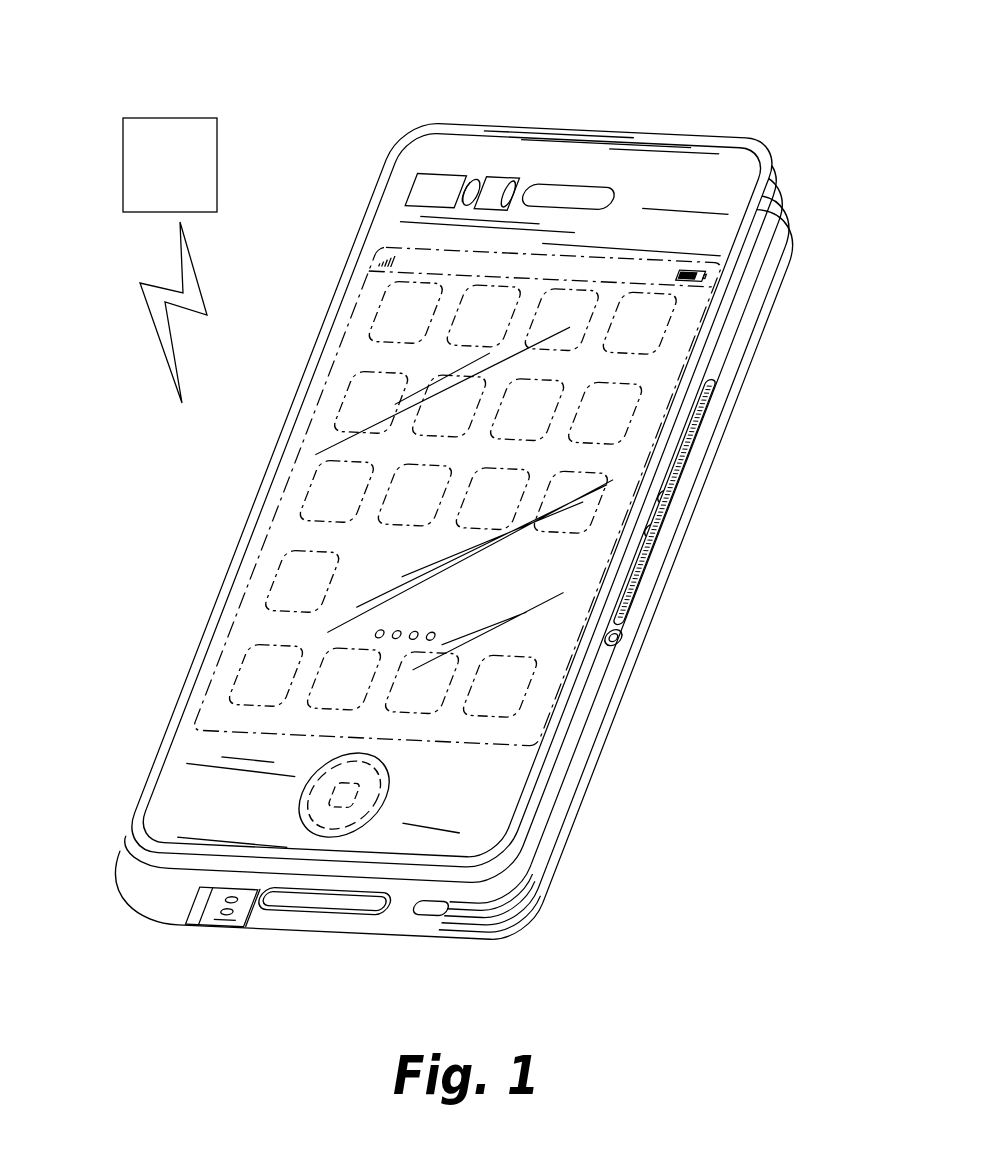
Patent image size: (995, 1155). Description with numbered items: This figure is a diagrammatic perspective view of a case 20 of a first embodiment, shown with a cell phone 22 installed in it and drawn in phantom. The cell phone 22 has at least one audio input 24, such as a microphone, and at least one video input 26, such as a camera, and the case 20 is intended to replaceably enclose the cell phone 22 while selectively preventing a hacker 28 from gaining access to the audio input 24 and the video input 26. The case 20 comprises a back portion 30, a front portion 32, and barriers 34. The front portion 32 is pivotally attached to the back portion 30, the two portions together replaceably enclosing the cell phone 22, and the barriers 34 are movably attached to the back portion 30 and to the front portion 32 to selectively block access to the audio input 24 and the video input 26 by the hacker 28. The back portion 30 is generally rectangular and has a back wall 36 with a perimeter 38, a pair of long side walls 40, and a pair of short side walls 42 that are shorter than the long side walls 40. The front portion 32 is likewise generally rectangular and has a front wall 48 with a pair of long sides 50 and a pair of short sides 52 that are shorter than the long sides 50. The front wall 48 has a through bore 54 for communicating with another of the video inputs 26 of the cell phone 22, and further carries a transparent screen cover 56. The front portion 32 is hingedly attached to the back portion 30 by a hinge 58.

The case 20 is at (455, 511).
The cell phone 22 is at (394, 496).
The audio input 24 is at (215, 925).
The video input 26 is at (437, 188).
The hacker 28 is at (192, 183).
The back portion 30 is at (625, 694).
The front portion 32 is at (663, 132).
The barriers 34 is at (497, 172).
The back wall 36 is at (517, 902).
The perimeter 38 is at (593, 777).
The long side walls 40 is at (737, 345).
The short side walls 42 is at (186, 900).
The front wall 48 is at (717, 180).
The long sides 50 is at (338, 288).
The short sides 52 is at (560, 128).
The through bore 54 is at (446, 180).
The transparent screen cover 56 is at (390, 375).
The hinge 58 is at (670, 488).